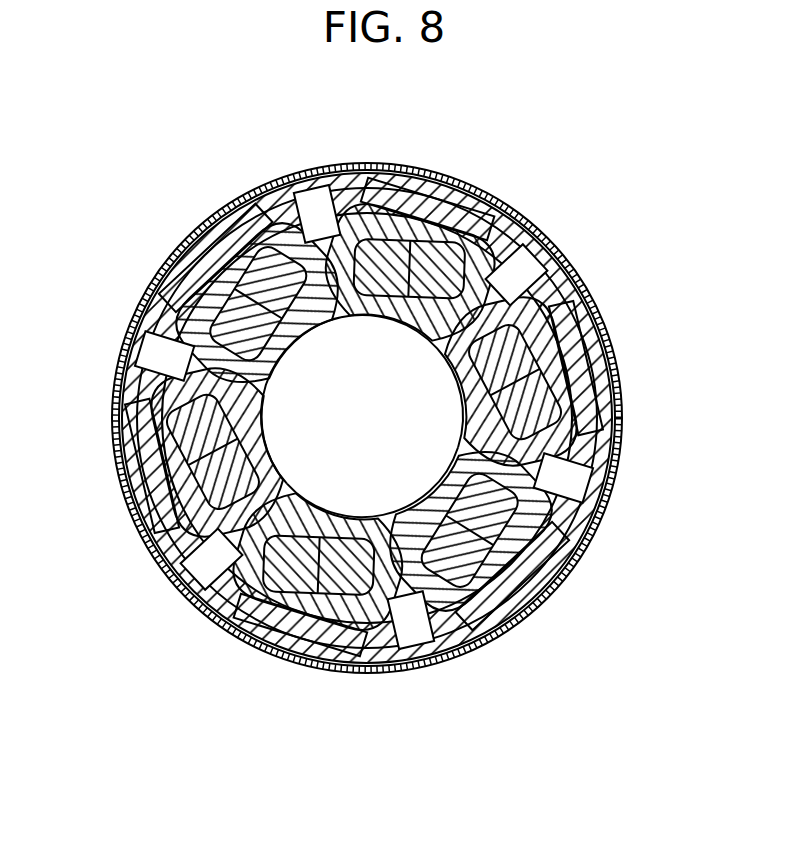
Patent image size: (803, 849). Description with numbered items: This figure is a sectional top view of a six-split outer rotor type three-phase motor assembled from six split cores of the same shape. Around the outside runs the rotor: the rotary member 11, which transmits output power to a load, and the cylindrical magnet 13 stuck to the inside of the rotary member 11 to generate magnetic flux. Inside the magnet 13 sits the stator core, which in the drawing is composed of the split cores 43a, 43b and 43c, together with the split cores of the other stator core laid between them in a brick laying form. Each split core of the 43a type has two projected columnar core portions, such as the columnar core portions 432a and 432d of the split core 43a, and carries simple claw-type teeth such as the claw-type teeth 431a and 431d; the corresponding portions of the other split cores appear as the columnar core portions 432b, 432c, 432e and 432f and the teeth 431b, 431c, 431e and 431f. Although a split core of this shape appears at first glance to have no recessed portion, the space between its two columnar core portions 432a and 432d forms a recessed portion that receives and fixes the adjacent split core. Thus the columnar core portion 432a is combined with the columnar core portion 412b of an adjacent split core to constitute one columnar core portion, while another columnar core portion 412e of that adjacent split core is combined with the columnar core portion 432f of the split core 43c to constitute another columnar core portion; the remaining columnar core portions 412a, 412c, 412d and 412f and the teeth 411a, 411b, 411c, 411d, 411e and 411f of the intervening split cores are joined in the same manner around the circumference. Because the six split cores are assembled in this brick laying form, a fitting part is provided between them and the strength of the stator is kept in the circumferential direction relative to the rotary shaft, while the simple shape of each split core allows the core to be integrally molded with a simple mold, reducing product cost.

The rotary member 11 is at (452, 165).
The cylindrical magnet 13 is at (518, 650).
The split core 43a is at (443, 343).
The split core 43b is at (255, 378).
The split core 43c is at (383, 527).
The slit 411a is at (160, 282).
The slit 411b is at (590, 285).
The slit 411c is at (437, 665).
The slit 411d is at (413, 168).
The slit 411e is at (605, 510).
The slit 411f is at (130, 520).
The bridge portion 412a is at (216, 258).
The columnar core portion 412b is at (588, 350).
The bridge portion 412c is at (152, 466).
The bridge portion 412d is at (498, 183).
The columnar core portion 412e is at (563, 587).
The bridge portion 412f is at (301, 625).
The claw-type tooth 431a is at (622, 450).
The pole piece 431b is at (258, 210).
The pole piece 431c is at (228, 632).
The claw-type tooth 431d is at (545, 200).
The pole piece 431e is at (125, 405).
The pole piece 431f is at (548, 592).
The columnar core portion 432a is at (540, 418).
The magnet 432b is at (258, 303).
The magnet 432c is at (385, 668).
The columnar core portion 432d is at (348, 192).
The magnet 432e is at (212, 451).
The columnar core portion 432f is at (603, 528).